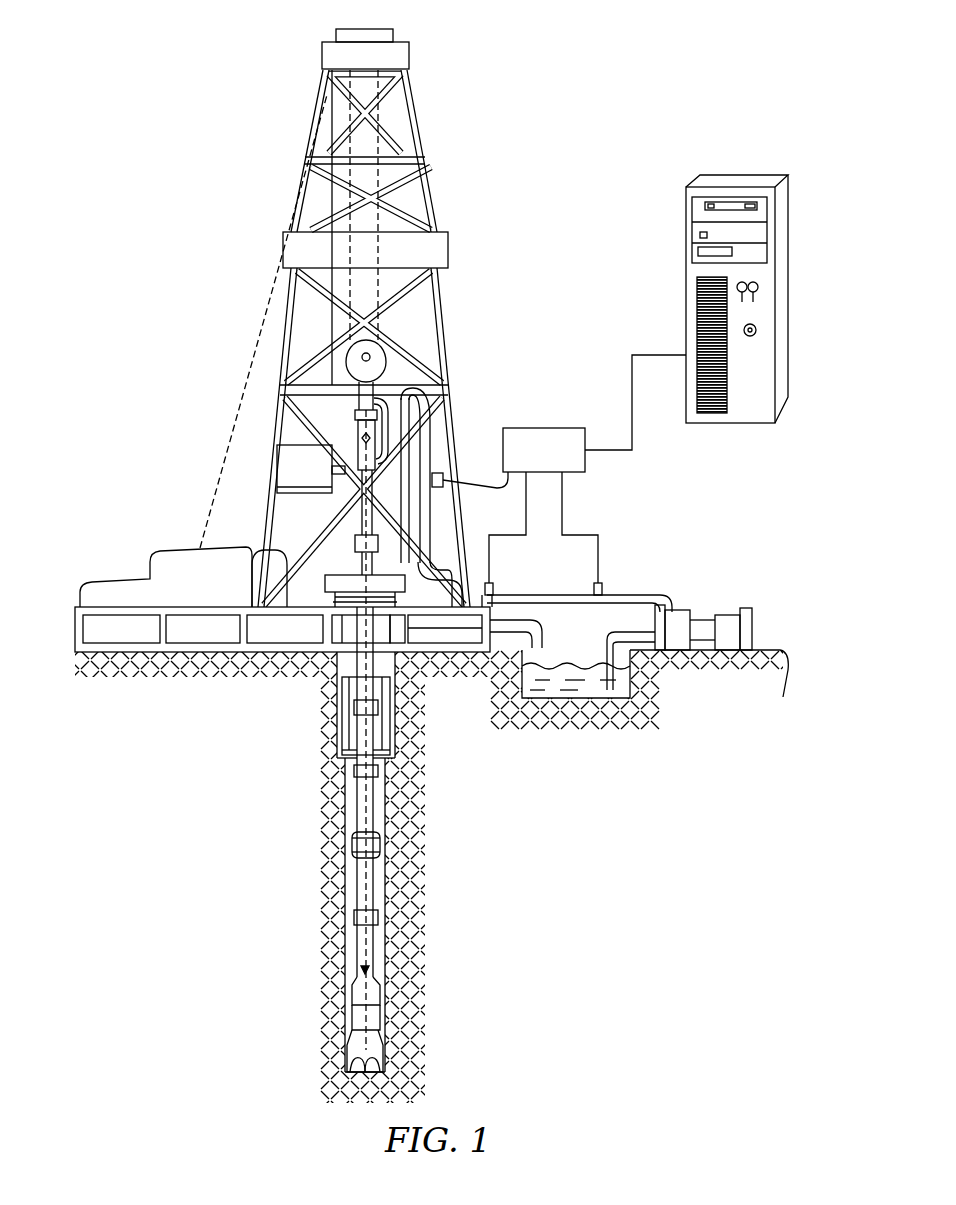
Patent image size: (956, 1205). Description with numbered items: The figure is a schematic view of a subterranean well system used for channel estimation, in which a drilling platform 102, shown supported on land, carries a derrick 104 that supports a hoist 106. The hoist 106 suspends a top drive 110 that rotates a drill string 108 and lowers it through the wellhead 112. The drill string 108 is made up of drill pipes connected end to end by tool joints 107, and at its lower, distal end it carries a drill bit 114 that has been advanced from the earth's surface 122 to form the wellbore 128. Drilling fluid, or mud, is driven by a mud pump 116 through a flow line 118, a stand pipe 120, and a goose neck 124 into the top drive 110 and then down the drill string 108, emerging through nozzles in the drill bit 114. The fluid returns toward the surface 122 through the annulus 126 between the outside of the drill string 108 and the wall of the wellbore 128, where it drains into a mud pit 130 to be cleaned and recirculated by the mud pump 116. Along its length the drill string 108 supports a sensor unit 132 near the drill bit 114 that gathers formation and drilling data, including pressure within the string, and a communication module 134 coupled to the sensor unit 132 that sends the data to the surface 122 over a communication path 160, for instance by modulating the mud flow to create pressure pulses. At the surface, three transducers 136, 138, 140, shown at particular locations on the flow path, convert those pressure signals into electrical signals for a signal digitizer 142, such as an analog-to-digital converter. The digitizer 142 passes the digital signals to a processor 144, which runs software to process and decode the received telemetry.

The drilling platform 102 is at (75, 630).
The derrick 104 is at (412, 106).
The hoist 106 is at (380, 350).
The tool joints 107 is at (347, 773).
The drill string 108 is at (378, 805).
The top drive 110 is at (412, 445).
The wellhead 112 is at (335, 576).
The drill bit 114 is at (382, 1062).
The mud pump 116 is at (672, 620).
The flow line 118 is at (610, 608).
The stand pipe 120 is at (425, 462).
The earth's surface 122 is at (432, 876).
The goose neck 124 is at (392, 405).
The annulus 126 is at (405, 882).
The wellbore 128 is at (385, 835).
The mud pit 130 is at (585, 692).
The sensor unit 132 is at (363, 1020).
The communication module 134 is at (360, 993).
The transducer 136 is at (440, 488).
The transducer 138 is at (497, 585).
The transducer 140 is at (594, 588).
The signal digitizer 142 is at (587, 469).
The processor 144 is at (686, 200).
The communication path 160 is at (372, 885).